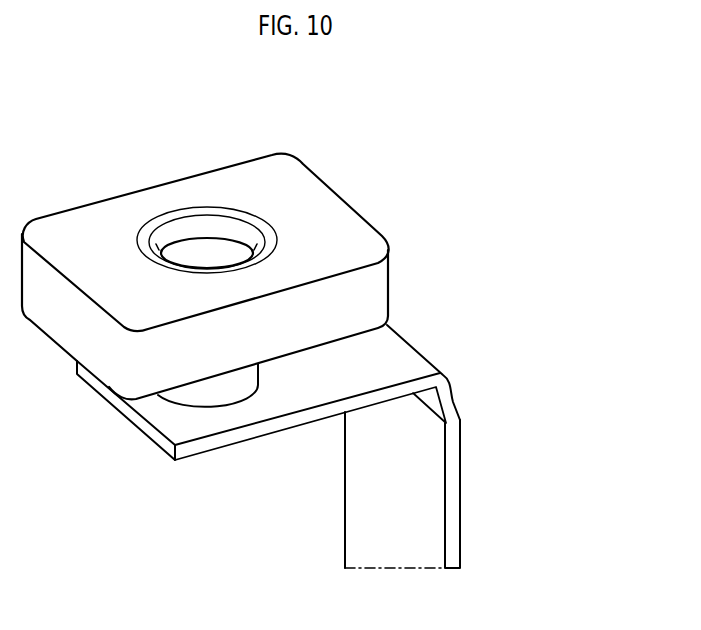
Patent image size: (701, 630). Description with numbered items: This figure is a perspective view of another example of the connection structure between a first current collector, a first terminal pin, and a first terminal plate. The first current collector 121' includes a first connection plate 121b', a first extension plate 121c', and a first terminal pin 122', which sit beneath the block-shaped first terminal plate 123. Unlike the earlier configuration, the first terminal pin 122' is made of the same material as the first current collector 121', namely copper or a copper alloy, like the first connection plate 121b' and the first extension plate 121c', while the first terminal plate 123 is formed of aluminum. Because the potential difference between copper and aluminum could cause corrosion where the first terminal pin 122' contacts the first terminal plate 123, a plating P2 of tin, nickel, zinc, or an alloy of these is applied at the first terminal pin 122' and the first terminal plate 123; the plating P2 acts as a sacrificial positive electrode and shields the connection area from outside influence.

The first terminal plate 123 is at (333, 205).
The plating P2 is at (236, 366).
The first terminal pin 122' is at (157, 432).
The first current collector 121' is at (321, 422).
The first extension plate 121c' is at (274, 368).
The first connection plate 121b' is at (455, 490).